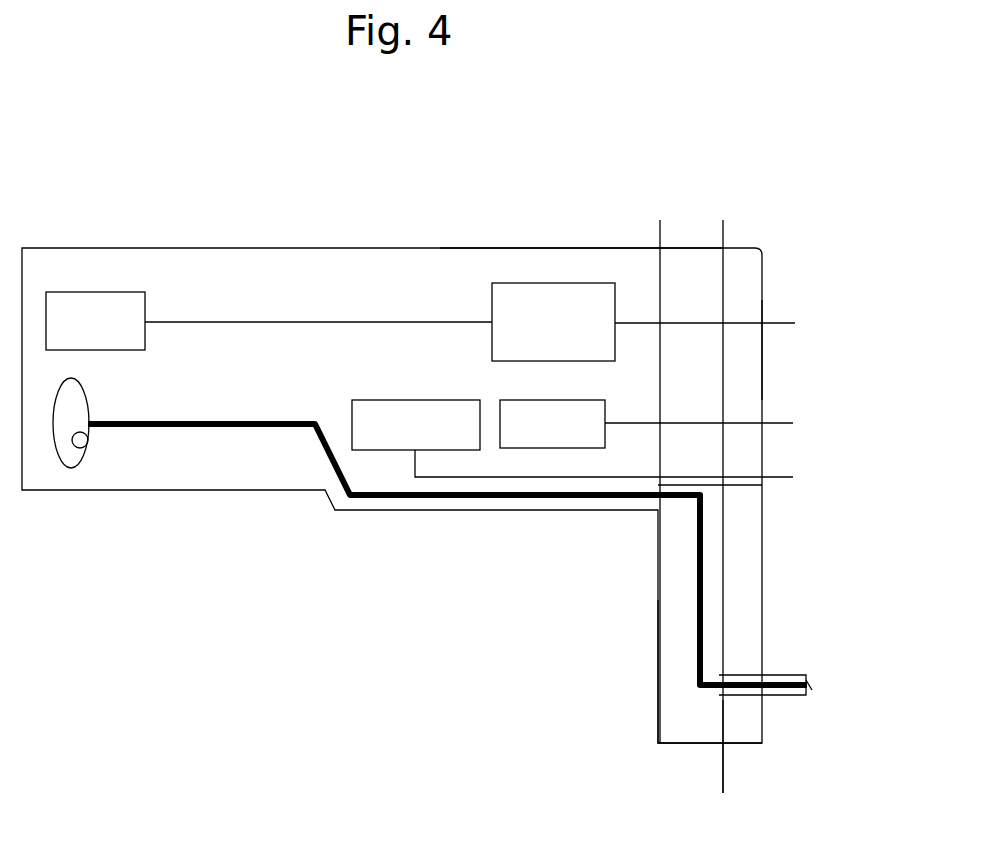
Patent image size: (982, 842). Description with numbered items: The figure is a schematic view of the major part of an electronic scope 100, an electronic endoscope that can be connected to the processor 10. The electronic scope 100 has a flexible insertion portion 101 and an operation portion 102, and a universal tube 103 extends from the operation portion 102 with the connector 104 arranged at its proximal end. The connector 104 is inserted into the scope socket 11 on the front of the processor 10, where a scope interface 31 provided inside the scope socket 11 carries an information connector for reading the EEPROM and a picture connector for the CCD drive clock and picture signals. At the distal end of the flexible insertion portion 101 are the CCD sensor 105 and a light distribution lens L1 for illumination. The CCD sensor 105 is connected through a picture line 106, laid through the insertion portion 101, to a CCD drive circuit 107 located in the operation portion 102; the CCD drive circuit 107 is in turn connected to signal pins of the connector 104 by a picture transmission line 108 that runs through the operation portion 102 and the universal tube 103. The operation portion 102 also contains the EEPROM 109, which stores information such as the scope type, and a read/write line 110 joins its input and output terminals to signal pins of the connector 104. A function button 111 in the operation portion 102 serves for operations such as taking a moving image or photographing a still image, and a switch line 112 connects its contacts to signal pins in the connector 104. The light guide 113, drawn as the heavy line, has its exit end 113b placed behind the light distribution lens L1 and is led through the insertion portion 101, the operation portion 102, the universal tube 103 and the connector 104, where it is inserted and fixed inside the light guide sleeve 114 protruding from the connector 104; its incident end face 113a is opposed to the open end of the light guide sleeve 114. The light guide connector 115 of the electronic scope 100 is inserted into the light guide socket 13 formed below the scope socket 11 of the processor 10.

The electronic scope 100 is at (383, 233).
The flexible insertion portion 101 is at (148, 246).
The operation portion 102 is at (507, 246).
The universal tube 103 is at (633, 246).
The connector 104 is at (700, 247).
The CCD sensor 105 is at (80, 291).
The picture line 106 is at (265, 320).
The CCD drive circuit 107 is at (560, 282).
The picture transmission line 108 is at (678, 322).
The EEPROM 109 is at (553, 449).
The read/write line 110 is at (635, 423).
The function button 111 is at (407, 451).
The switch line 112 is at (630, 477).
The light guide 113 is at (264, 428).
The incident end face 113a is at (812, 688).
The exit end 113b is at (88, 456).
The light guide sleeve 114 is at (773, 697).
The light guide connector 115 is at (660, 722).
The processor 10 is at (770, 373).
The scope socket 11 is at (720, 264).
The light guide socket 13 is at (718, 697).
The scope interface 31 is at (756, 247).
The light distribution lens L1 is at (72, 466).